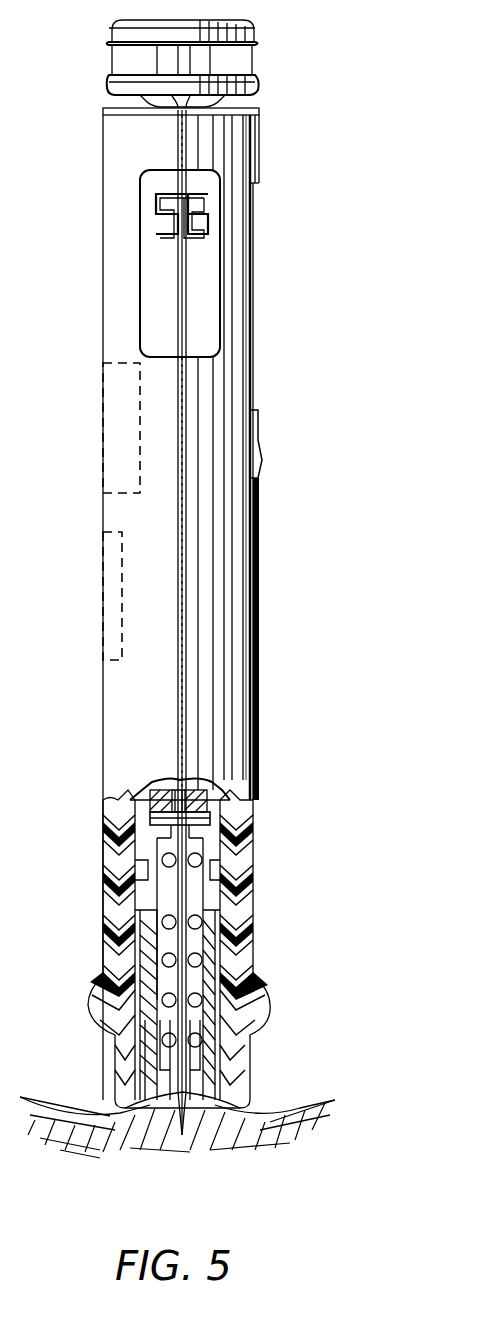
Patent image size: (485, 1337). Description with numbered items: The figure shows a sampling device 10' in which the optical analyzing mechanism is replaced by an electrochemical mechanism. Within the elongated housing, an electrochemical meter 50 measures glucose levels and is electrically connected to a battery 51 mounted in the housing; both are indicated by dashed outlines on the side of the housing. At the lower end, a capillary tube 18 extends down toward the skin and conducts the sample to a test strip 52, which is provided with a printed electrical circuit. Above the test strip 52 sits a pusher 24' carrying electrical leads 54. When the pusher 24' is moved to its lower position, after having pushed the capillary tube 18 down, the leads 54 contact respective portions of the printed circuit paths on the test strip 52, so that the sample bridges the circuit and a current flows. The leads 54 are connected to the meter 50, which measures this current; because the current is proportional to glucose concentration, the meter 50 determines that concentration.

The device 10' is at (184, 589).
The battery 51 is at (115, 427).
The electrochemical meter 50 is at (110, 600).
The pusher 24' is at (224, 759).
The electrical leads 54 is at (150, 800).
The test strip 52 is at (210, 818).
The capillary tube 18 is at (192, 892).